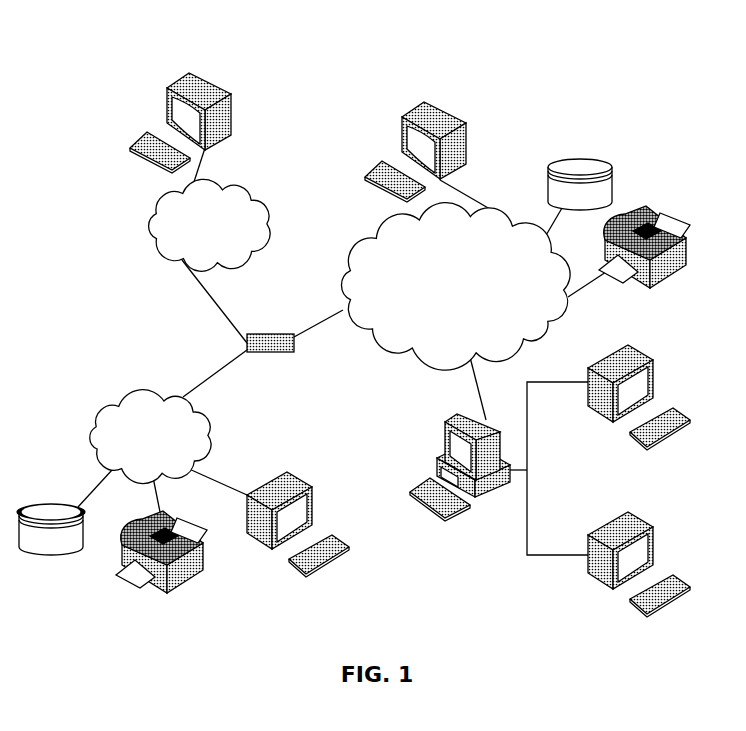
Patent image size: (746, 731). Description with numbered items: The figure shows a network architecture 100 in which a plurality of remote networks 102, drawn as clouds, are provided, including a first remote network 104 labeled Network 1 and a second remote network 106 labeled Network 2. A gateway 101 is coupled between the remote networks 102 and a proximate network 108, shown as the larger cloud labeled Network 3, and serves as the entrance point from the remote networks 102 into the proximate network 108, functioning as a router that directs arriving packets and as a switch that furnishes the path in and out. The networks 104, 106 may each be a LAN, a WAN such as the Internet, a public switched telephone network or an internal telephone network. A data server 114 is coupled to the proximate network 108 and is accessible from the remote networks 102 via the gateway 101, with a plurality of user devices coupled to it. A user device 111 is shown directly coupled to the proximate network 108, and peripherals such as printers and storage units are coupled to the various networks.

The architecture 100 is at (113, 58).
The gateway 101 is at (258, 334).
The remote networks 102 is at (131, 273).
The first remote network 104 is at (97, 413).
The second remote network 106 is at (263, 203).
The proximate network 108 is at (538, 335).
The user device 111 is at (466, 126).
The data server 114 is at (445, 433).